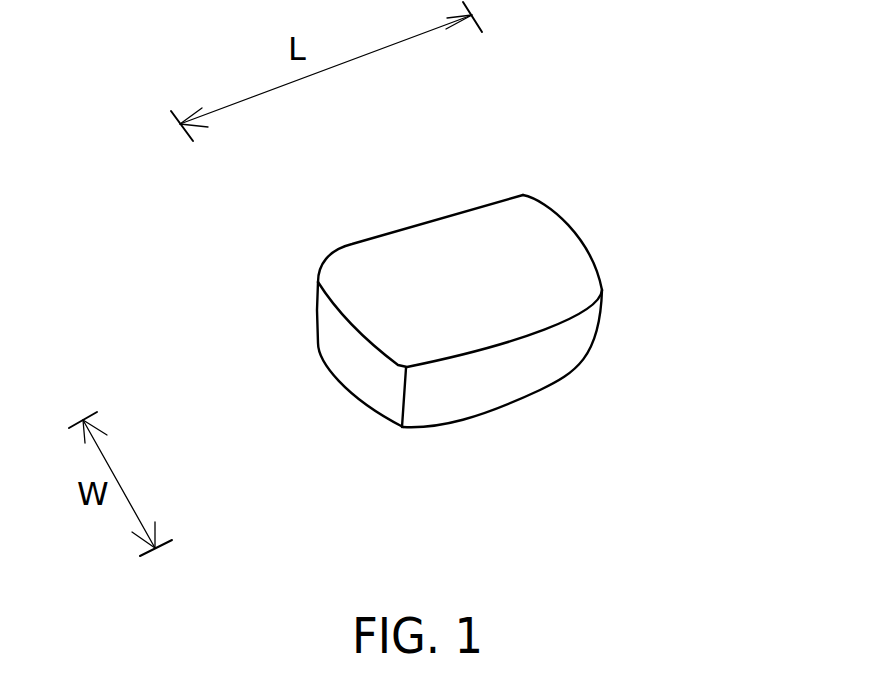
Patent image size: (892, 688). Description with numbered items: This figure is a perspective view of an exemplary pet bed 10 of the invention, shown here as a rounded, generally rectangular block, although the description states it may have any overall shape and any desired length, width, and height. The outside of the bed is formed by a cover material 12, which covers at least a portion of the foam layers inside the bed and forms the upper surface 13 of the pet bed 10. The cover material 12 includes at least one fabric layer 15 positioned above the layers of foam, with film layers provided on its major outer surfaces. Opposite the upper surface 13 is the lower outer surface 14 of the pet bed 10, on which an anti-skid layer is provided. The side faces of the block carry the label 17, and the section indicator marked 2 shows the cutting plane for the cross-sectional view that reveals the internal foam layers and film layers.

The pet bed 10 is at (640, 220).
The cover material 12 is at (510, 315).
The upper surface 13 is at (545, 277).
The lower outer surface 14 is at (342, 413).
The fabric layer 15 is at (490, 218).
The side surface 17 is at (335, 341).
The section line for FIG. 2 is at (478, 282).